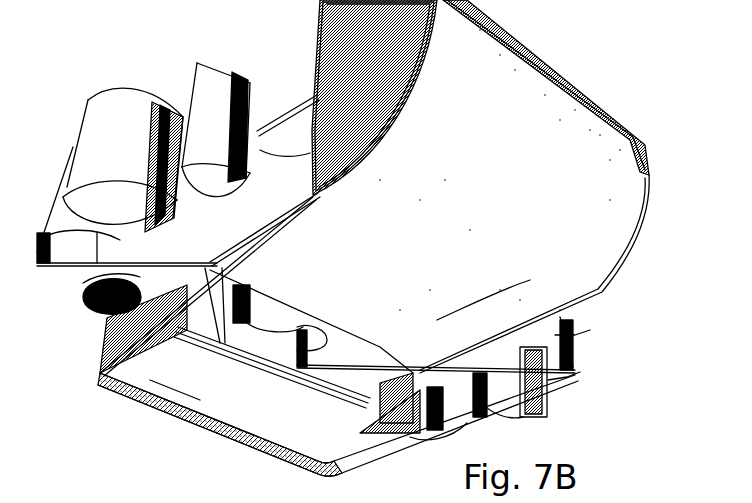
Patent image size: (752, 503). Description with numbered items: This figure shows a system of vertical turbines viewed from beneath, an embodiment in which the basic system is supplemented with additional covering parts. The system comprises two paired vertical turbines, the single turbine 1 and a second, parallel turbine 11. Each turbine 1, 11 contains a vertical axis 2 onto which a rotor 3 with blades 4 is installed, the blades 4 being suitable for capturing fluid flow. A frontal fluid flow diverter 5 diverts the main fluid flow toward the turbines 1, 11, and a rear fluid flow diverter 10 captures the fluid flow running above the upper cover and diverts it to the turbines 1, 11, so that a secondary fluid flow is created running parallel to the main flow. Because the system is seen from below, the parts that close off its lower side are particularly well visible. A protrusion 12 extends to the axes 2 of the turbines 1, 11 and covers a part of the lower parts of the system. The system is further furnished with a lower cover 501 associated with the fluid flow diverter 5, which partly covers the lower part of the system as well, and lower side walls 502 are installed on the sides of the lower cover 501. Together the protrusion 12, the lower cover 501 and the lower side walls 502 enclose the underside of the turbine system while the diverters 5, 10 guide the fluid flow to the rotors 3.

The turbine 1 is at (575, 398).
The vertical axis 2 is at (460, 393).
The rotor 3 is at (567, 377).
The blades 4 is at (575, 335).
The frontal fluid flow diverter 5 is at (207, 430).
The lower cover 501 is at (177, 377).
The lower side walls 502 is at (100, 358).
The rear fluid flow diverter 10 is at (517, 100).
The second turbine 11 is at (102, 70).
The protrusion 12 is at (530, 280).